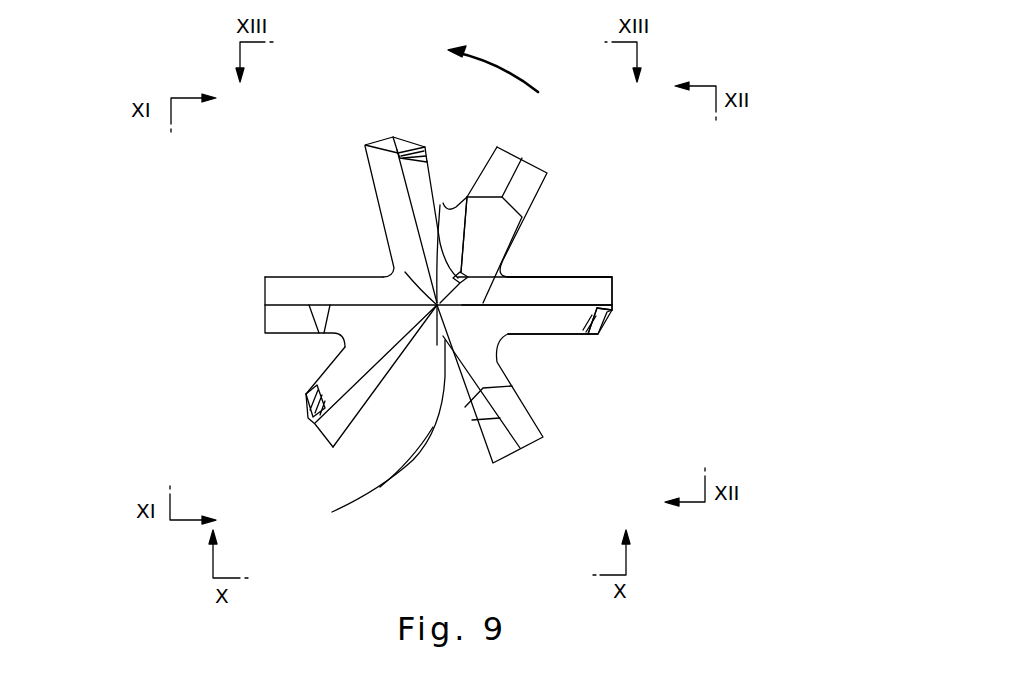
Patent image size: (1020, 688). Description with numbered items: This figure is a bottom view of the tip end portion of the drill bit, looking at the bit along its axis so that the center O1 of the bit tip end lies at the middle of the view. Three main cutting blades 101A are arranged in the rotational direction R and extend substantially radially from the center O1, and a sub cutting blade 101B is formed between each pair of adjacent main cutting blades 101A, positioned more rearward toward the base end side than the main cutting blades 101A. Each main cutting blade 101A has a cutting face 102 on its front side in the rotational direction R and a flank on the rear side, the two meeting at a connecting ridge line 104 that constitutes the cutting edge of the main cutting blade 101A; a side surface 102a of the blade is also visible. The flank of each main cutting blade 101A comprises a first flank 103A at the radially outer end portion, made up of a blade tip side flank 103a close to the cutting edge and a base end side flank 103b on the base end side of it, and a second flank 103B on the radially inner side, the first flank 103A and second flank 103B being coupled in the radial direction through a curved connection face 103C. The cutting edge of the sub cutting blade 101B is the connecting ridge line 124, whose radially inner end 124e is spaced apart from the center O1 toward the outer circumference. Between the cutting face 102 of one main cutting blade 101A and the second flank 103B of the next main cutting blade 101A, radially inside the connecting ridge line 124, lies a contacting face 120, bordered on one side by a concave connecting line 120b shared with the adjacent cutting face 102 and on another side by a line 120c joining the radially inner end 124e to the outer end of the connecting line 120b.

The rotational direction R is at (510, 72).
The center of the bit tip end O1 is at (395, 255).
The main cutting blade 101A is at (375, 137).
The sub cutting blade 101B is at (500, 146).
The cutting face 102 is at (580, 277).
The blade side surface 102a is at (520, 303).
The first flank 103A is at (753, 297).
The blade tip side flank 103a is at (605, 309).
The base end side flank 103b is at (605, 325).
The second flank 103B is at (540, 330).
The connection face 103C is at (303, 400).
The connecting ridge line 104 is at (577, 287).
The contacting face 120 is at (443, 203).
The connecting line 120b is at (320, 333).
The line 120c is at (380, 487).
The connecting ridge line 124 is at (437, 305).
The radially inner end 124e is at (377, 277).